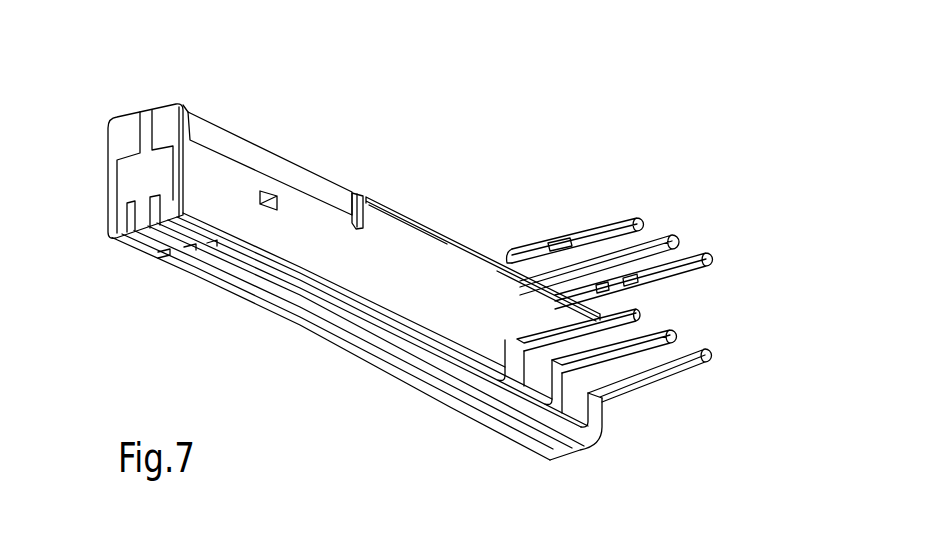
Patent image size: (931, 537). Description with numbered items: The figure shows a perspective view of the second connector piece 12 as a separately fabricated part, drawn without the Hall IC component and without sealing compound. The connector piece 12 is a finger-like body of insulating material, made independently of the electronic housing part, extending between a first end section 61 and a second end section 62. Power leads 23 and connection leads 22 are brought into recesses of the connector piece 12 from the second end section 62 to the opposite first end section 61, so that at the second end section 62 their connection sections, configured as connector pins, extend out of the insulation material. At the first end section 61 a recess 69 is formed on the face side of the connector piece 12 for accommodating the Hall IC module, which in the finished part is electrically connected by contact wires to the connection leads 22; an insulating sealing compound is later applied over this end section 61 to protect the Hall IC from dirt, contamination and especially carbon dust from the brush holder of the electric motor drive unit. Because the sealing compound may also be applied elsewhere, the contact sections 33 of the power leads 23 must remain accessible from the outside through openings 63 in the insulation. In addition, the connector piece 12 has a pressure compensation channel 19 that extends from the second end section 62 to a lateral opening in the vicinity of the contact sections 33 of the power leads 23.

The first end section 61 is at (183, 102).
The recess 69 is at (124, 183).
The contact sections 33 is at (257, 150).
The openings 63 is at (363, 195).
The second connector piece 12 is at (440, 233).
The pressure compensation channel 19 is at (268, 208).
The power leads 23 is at (641, 305).
The connection leads 22 is at (643, 305).
The second end section 62 is at (622, 412).